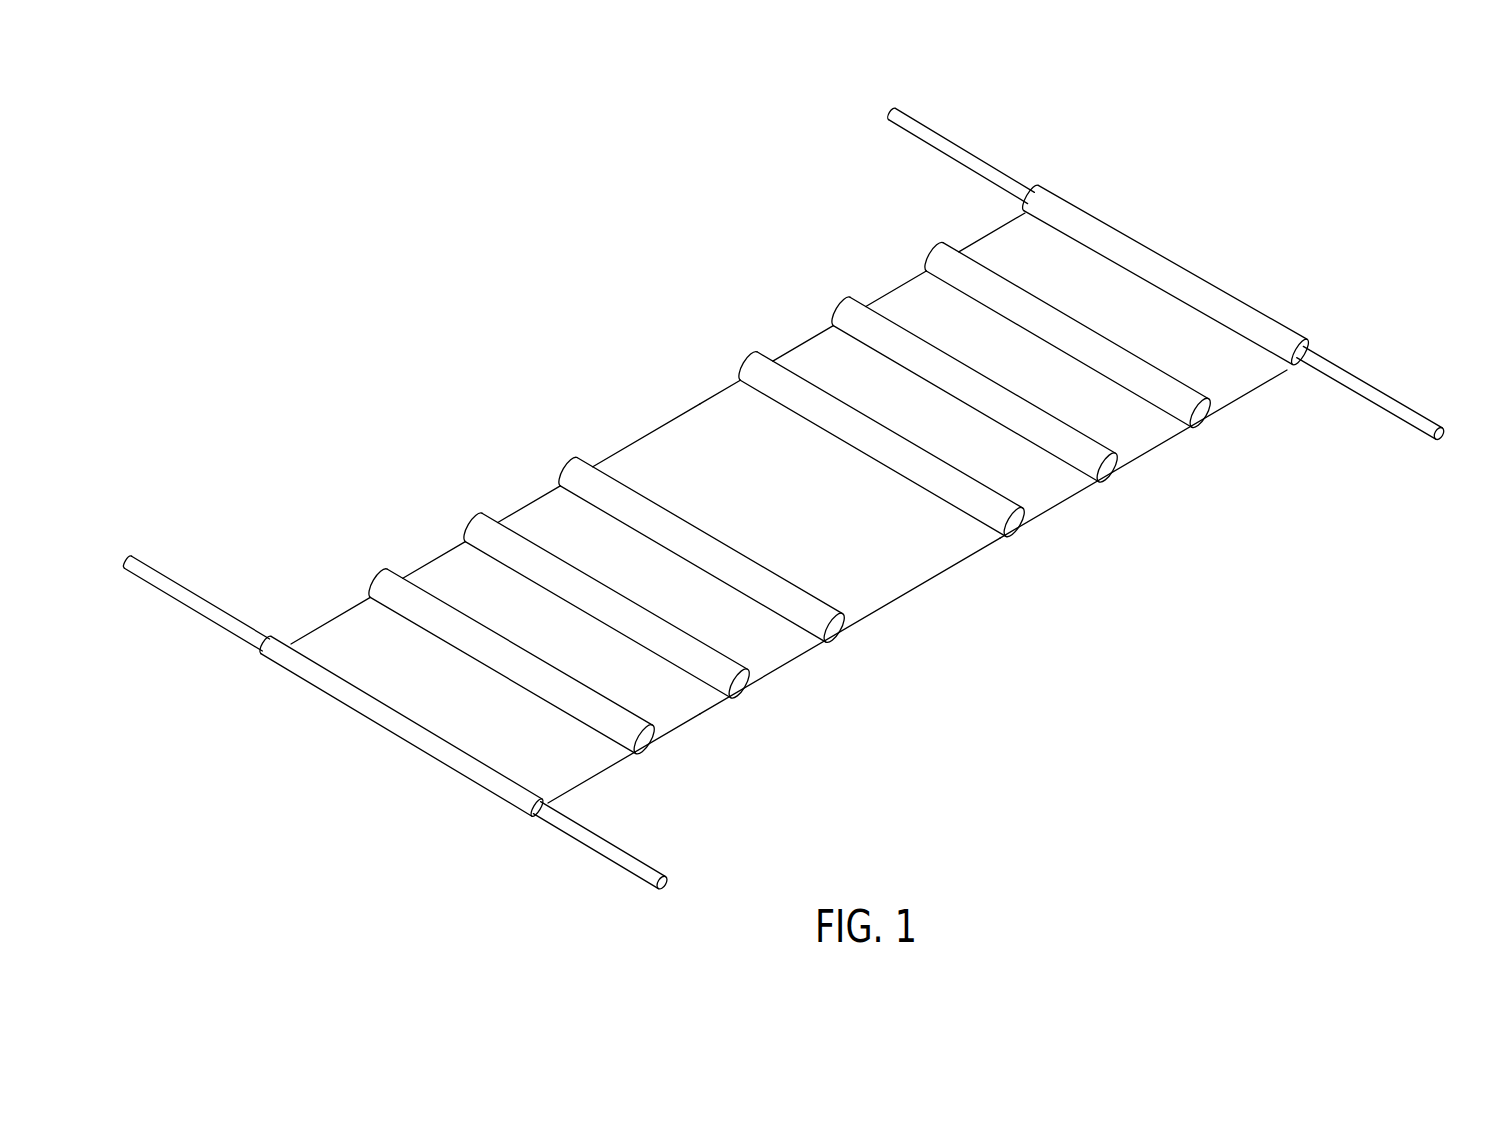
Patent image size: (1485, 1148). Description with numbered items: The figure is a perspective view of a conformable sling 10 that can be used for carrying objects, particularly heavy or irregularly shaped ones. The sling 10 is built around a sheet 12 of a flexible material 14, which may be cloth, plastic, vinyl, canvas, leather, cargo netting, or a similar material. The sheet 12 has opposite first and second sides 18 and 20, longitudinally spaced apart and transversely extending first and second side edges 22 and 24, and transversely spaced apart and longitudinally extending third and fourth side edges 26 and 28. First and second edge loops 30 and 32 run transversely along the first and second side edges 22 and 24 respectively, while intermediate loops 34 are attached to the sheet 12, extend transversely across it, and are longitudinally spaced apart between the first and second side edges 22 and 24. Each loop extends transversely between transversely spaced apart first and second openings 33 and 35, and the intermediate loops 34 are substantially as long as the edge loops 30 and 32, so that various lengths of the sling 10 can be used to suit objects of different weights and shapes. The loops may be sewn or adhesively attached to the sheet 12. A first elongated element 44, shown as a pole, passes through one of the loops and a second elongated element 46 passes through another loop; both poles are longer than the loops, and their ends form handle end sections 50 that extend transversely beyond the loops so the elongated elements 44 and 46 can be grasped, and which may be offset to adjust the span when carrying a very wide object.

The conformable sling 10 is at (948, 664).
The sheet 12 is at (975, 548).
The flexible material 14 is at (530, 502).
The first side 18 is at (680, 432).
The second side 20 is at (866, 616).
The first side edge 22 is at (528, 813).
The second side edge 24 is at (1295, 366).
The third side edge 26 is at (715, 394).
The fourth side edge 28 is at (688, 725).
The first edge loop 30 is at (363, 697).
The second edge loop 32 is at (1160, 263).
The first opening 33 is at (748, 680).
The intermediate loops 34 is at (1043, 305).
The second opening 35 is at (472, 522).
The first elongated element 44 is at (125, 560).
The second elongated element 46 is at (896, 108).
The handle end sections 50 is at (963, 143).